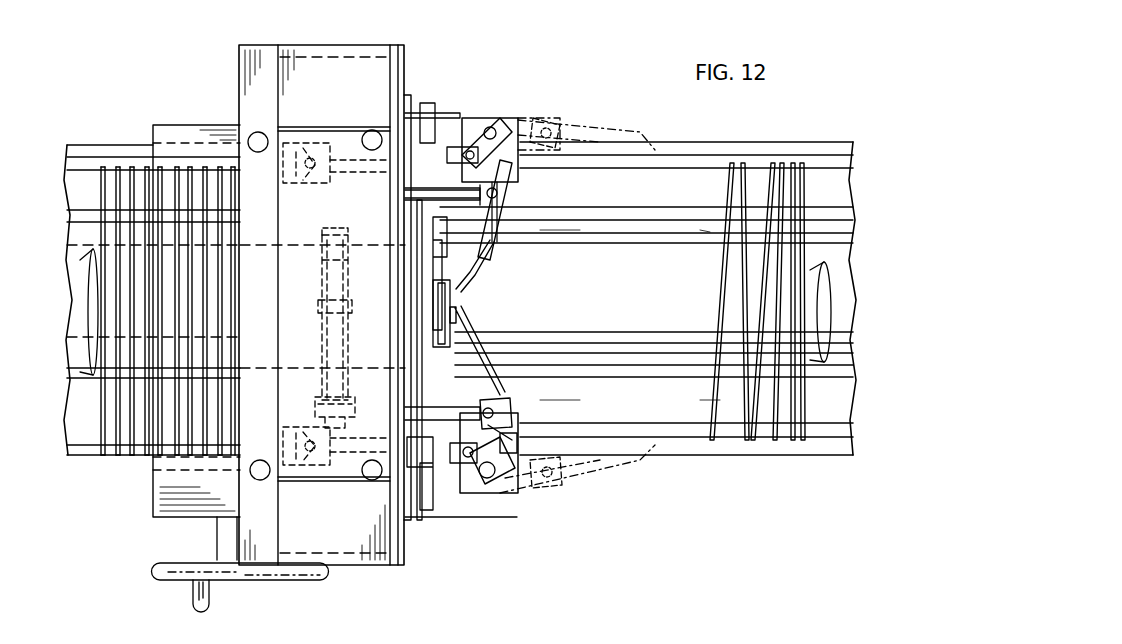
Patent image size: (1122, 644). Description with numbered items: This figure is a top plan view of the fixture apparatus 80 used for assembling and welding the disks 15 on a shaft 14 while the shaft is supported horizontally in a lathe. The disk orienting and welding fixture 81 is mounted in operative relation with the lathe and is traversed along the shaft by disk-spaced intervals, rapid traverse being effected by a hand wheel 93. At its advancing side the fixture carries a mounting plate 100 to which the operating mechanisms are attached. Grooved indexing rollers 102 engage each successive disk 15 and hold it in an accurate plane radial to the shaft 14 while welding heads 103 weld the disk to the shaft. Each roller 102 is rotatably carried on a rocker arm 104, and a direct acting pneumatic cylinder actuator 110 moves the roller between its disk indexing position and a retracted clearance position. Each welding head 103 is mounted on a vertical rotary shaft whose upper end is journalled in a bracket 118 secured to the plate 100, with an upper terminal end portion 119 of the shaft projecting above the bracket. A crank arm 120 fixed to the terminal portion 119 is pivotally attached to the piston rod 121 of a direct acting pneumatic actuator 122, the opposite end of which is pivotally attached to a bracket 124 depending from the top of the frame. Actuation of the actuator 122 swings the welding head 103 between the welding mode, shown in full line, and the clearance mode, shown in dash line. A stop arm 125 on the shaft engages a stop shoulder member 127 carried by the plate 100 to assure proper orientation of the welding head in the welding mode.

The shaft 14 is at (595, 311).
The disks 15 is at (760, 290).
The fixture apparatus 80 is at (228, 100).
The disk orienting and welding fixture 81 is at (382, 70).
The hand wheel 93 is at (185, 575).
The mounting panel or plate 100 is at (395, 388).
The grooved indexing rollers 102 is at (435, 304).
The welding heads 103 is at (465, 315).
The rocker arm 104 is at (455, 257).
The direct acting pneumatic cylinder actuator 110 is at (325, 322).
The bracket 118 is at (457, 502).
The upper terminal end portion 119 is at (500, 128).
The crank arm 120 is at (478, 138).
The piston rod 121 is at (452, 140).
The direct acting pneumatic actuator 122 is at (340, 140).
The bracket 124 is at (288, 128).
The stop arm 125 is at (490, 178).
The stop shoulder member 127 is at (402, 189).